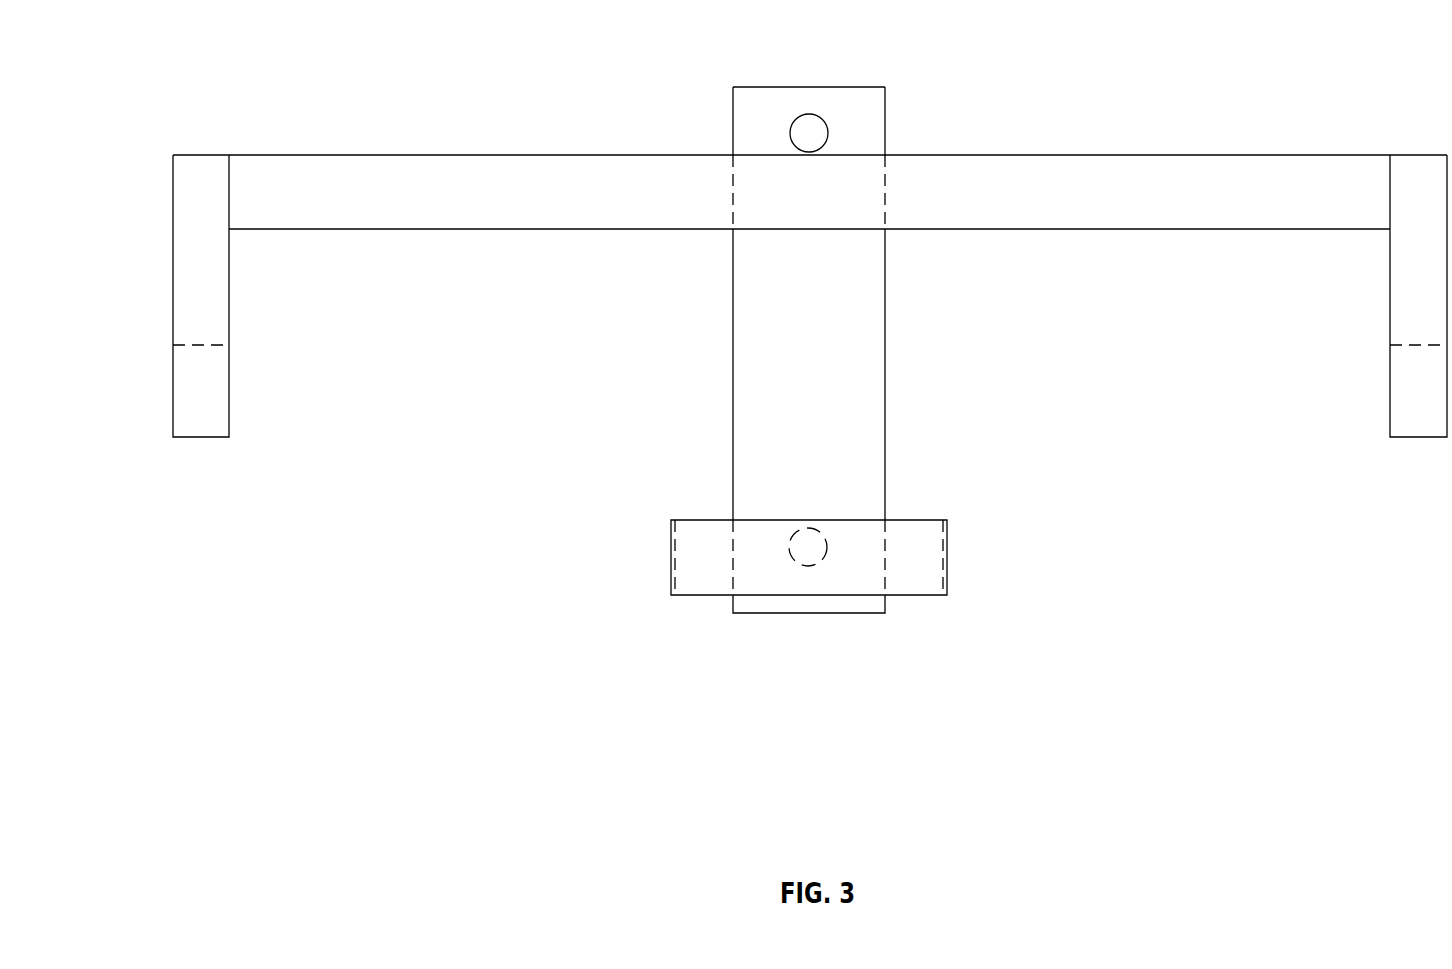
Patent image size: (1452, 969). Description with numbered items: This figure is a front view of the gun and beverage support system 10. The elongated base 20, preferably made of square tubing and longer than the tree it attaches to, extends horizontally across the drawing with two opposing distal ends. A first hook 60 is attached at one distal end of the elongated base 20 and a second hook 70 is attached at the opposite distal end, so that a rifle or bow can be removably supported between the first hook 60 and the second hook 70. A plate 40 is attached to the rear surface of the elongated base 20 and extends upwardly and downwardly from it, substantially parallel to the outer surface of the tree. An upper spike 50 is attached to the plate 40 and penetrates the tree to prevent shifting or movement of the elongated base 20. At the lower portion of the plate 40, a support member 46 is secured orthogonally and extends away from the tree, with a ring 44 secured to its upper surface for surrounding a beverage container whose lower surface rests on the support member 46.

The gun and beverage support system 10 is at (1123, 95).
The elongated base 20 is at (445, 172).
The plate 40 is at (753, 390).
The ring 44 is at (927, 518).
The support member 46 is at (815, 615).
The upper spike 50 is at (812, 128).
The first hook 60 is at (1395, 393).
The second hook 70 is at (225, 398).